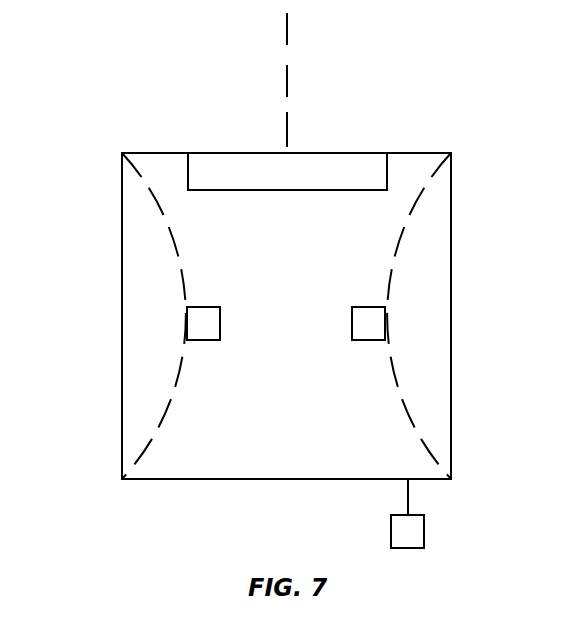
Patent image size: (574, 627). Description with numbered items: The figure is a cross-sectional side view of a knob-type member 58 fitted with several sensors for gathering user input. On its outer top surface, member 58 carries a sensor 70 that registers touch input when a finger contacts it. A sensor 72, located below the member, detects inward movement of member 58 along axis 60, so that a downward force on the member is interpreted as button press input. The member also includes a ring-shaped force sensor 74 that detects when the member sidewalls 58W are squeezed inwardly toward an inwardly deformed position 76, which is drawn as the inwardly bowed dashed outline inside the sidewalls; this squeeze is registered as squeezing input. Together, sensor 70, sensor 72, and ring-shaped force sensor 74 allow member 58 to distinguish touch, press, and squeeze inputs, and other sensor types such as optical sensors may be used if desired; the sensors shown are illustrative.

The member 58 is at (415, 153).
The member sidewalls 58W is at (122, 316).
The axis 60 is at (288, 77).
The sensor 70 is at (213, 164).
The sensor 72 is at (425, 530).
The ring-shaped force sensor 74 is at (352, 322).
The inwardly deformed position 76 is at (410, 209).